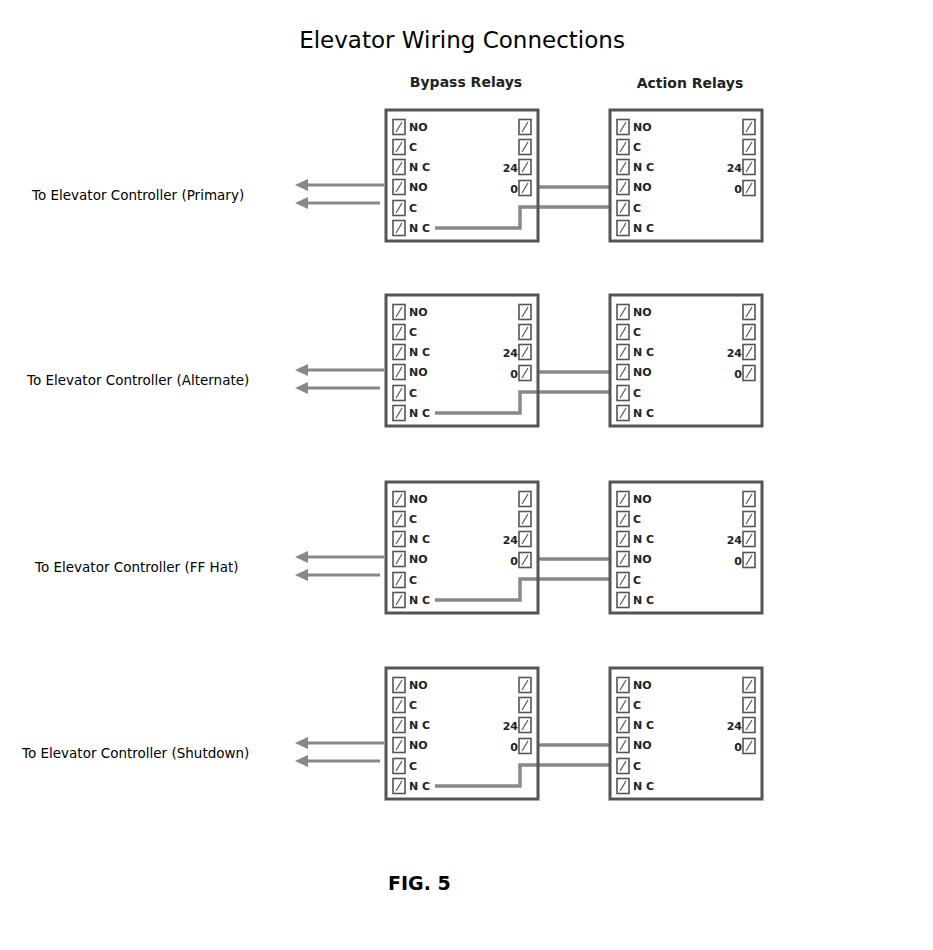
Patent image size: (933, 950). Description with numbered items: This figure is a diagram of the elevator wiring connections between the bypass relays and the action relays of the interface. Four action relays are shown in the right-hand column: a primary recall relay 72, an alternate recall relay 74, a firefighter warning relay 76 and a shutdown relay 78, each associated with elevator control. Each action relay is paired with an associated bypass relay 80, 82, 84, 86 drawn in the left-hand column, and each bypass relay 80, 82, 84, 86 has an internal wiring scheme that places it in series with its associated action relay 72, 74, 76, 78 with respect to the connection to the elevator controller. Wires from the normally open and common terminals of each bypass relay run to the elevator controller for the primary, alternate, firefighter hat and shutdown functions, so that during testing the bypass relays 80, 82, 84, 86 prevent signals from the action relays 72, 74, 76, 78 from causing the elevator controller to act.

The primary recall relay 72 is at (725, 127).
The alternate recall relay 74 is at (717, 317).
The firefighter warning relay 76 is at (723, 502).
The shutdown relay 78 is at (722, 685).
The bypass relay 80 is at (437, 150).
The bypass relay 82 is at (442, 337).
The bypass relay 84 is at (458, 533).
The bypass relay 86 is at (449, 750).